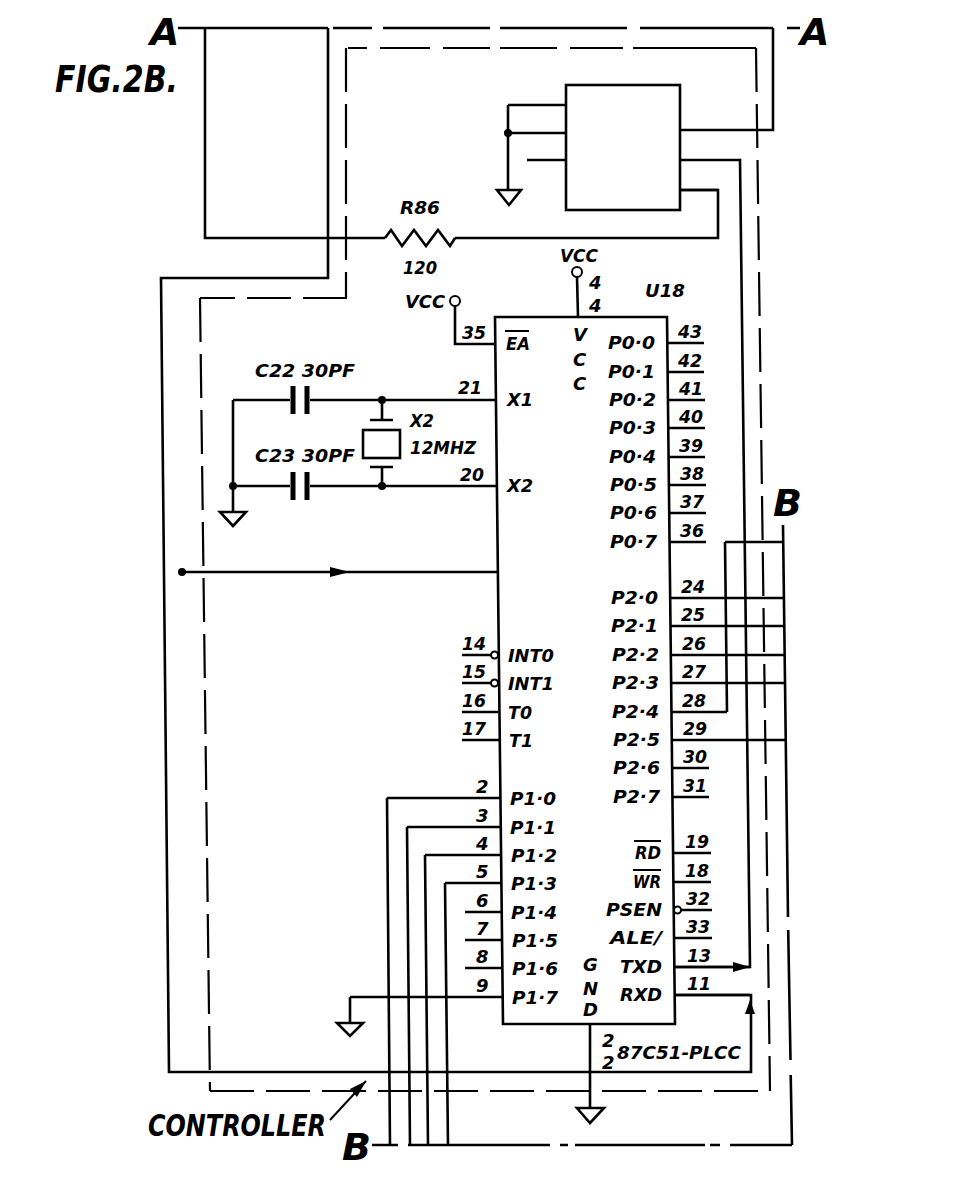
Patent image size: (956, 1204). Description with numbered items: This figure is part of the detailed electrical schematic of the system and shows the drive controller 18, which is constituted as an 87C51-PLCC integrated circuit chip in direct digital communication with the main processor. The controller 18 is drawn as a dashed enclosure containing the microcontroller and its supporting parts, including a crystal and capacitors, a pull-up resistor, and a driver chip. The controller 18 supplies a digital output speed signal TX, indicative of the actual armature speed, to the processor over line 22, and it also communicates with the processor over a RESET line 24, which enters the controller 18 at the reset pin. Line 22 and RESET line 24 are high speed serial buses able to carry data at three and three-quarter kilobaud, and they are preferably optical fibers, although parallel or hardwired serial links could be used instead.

The drive controller 18 is at (216, 882).
The line 22 is at (746, 128).
The RESET line 24 is at (318, 574).